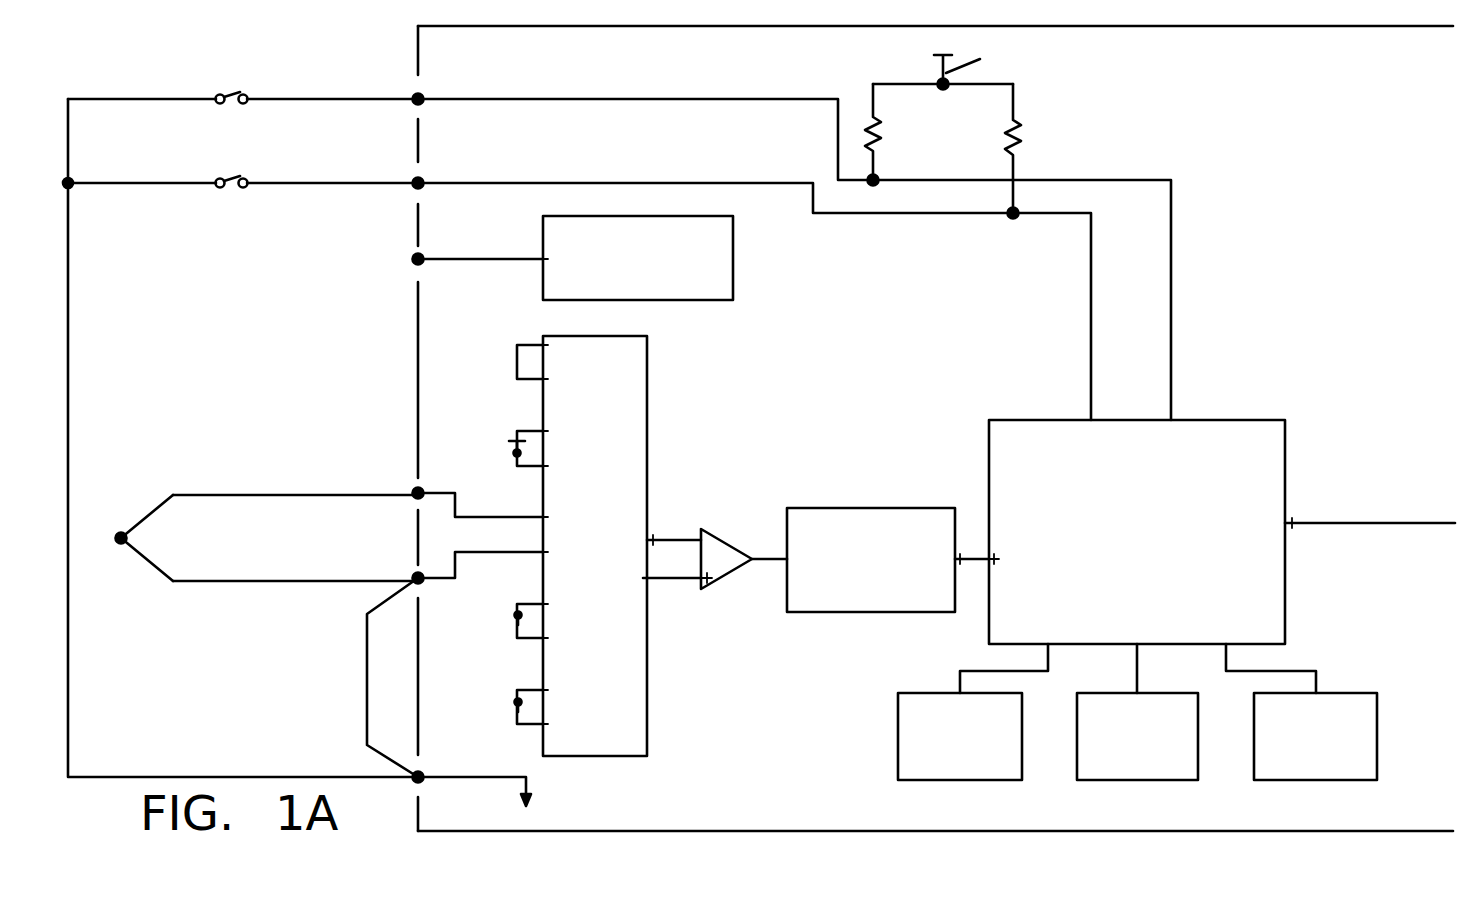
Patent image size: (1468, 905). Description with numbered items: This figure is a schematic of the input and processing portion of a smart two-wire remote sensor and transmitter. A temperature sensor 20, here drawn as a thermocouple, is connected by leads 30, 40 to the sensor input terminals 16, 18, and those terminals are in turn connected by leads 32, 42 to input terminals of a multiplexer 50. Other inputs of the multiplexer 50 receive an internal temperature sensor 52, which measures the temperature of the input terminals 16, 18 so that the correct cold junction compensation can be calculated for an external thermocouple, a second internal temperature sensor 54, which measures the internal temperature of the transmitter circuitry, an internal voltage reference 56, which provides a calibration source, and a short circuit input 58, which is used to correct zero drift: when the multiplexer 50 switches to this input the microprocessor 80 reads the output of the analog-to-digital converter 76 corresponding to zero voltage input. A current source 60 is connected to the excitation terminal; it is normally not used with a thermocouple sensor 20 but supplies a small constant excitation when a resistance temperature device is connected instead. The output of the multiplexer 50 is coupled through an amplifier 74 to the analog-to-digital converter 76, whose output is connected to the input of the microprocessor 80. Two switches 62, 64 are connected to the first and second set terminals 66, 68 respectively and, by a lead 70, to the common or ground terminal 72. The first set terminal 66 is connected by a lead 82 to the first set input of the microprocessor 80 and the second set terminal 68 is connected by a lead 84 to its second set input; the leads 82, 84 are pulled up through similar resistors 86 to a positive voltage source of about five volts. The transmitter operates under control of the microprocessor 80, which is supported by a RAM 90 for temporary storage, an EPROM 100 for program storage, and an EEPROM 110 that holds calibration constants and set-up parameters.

The terminal 16 is at (416, 497).
The terminal 18 is at (416, 582).
The temperature sensor 20 is at (120, 535).
The lead 30 is at (220, 494).
The lead 32 is at (470, 517).
The lead 40 is at (222, 580).
The lead 42 is at (470, 553).
The multiplexer 50 is at (650, 388).
The temperature sensor 52 is at (515, 625).
The second internal temperature sensor 54 is at (515, 716).
The internal voltage reference 56 is at (517, 452).
The short circuit input 58 is at (517, 372).
The current source 60 is at (733, 297).
The switch 62 is at (217, 96).
The switch 64 is at (217, 180).
The SET1 terminal 66 is at (422, 96).
The SET2 terminal 68 is at (422, 180).
The lead 70 is at (70, 727).
The common or ground terminal 72 is at (425, 773).
The amplifier 74 is at (725, 540).
The analog-to-digital converter 76 is at (813, 507).
The microprocessor 80 is at (1250, 418).
The lead 82 is at (605, 97).
The lead 84 is at (603, 181).
The resistors 86 is at (876, 119).
The RAM 90 is at (985, 782).
The EPROM 100 is at (1160, 782).
The EEPROM 110 is at (1338, 782).